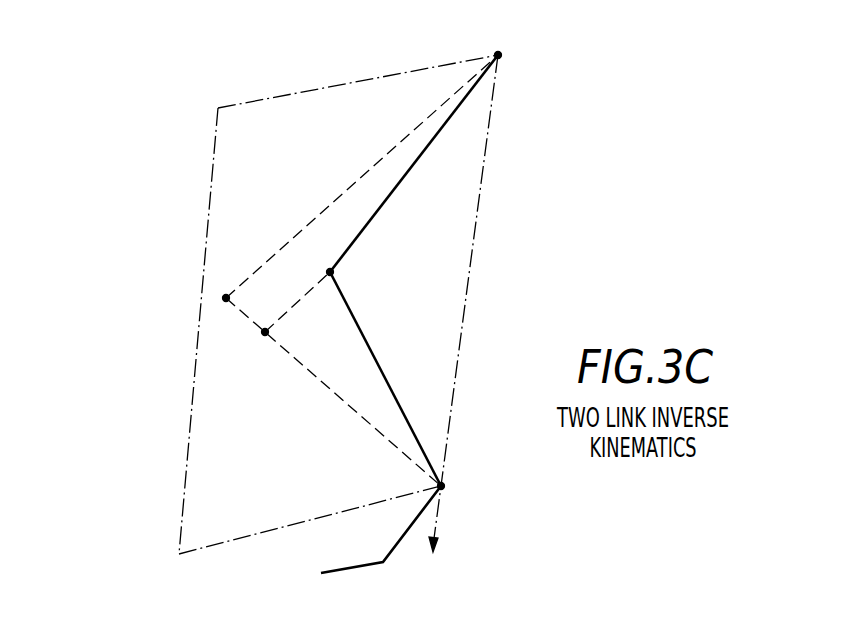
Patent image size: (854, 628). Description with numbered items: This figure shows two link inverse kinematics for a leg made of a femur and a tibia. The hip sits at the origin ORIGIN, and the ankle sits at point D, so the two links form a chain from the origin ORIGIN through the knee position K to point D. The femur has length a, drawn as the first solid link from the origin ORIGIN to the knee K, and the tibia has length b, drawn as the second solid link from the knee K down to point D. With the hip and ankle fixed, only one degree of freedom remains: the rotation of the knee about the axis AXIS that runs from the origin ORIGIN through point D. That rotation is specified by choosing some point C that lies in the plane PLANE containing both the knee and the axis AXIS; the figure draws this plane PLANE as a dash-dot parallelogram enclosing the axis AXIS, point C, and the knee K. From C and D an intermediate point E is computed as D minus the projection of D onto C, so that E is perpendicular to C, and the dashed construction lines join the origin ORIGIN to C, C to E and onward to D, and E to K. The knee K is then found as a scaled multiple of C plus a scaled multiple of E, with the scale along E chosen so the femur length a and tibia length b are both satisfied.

The plane containing C and axis PLANE is at (303, 88).
The axis AXIS is at (472, 258).
The origin ORIGIN is at (500, 54).
The femur length a is at (402, 180).
The tibia length b is at (374, 355).
The knee position K is at (329, 271).
The point C is at (226, 296).
The point E is at (264, 333).
The ankle point D is at (443, 485).